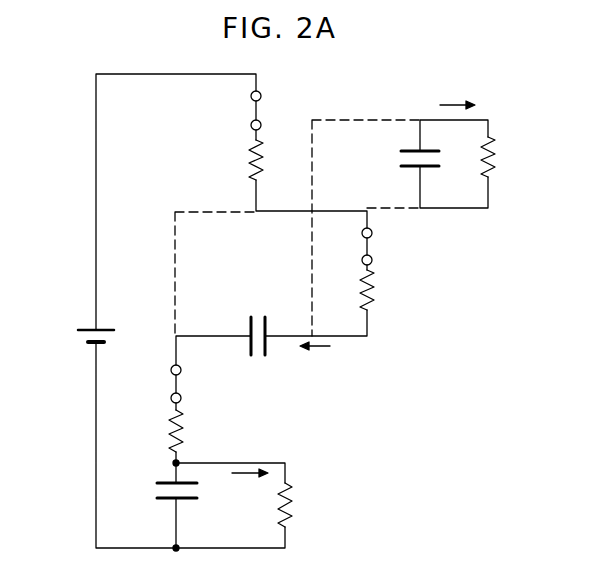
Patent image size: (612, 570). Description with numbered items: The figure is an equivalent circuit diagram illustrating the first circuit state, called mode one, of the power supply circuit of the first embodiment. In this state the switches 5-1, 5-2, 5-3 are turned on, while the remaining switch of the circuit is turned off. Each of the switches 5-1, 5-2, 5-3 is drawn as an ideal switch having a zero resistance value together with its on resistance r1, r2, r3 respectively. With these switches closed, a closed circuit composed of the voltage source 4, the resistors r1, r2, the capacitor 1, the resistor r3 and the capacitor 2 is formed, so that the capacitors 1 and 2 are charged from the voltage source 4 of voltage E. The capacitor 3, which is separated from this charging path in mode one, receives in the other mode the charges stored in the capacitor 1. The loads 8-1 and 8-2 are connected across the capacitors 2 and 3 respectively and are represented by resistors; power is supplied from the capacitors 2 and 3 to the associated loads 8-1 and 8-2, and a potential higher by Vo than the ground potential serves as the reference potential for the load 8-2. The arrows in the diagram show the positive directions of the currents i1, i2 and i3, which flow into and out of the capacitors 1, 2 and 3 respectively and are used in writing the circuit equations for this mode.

The capacitor 1 is at (258, 313).
The capacitor 2 is at (153, 492).
The capacitor 3 is at (396, 158).
The voltage source 4 is at (76, 342).
The switch 5-1 is at (250, 111).
The switch 5-2 is at (374, 247).
The switch 5-3 is at (184, 383).
The load 8-1 is at (296, 507).
The load 8-2 is at (497, 158).
The on resistance r1 is at (246, 160).
The on resistance r2 is at (375, 290).
The on resistance r3 is at (185, 433).
The current i1 is at (326, 352).
The current i2 is at (250, 489).
The current i3 is at (470, 105).